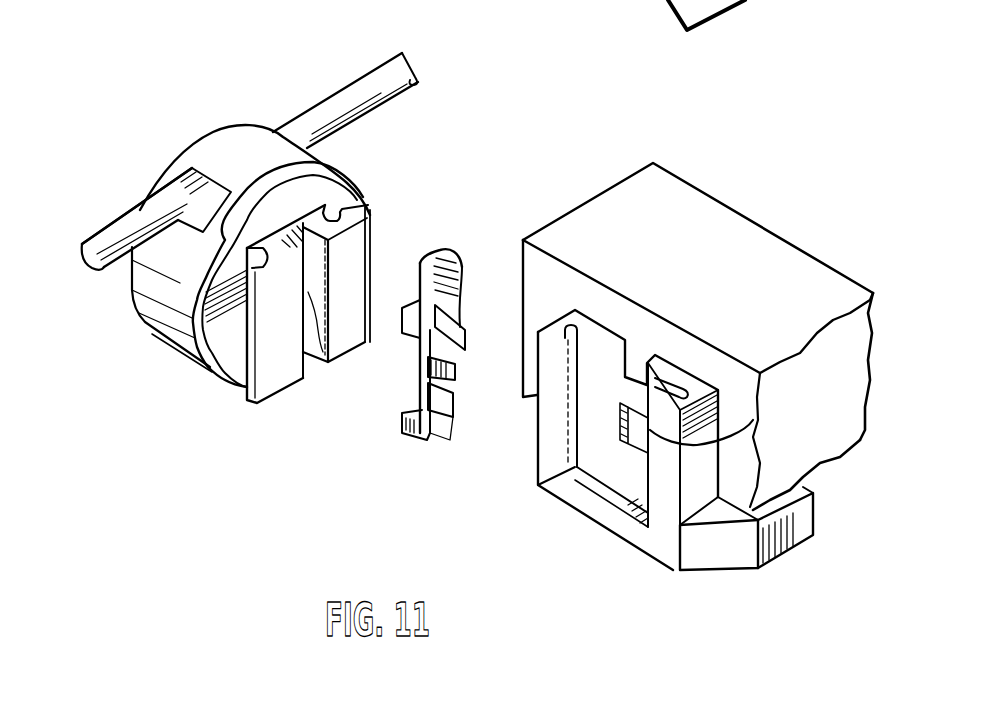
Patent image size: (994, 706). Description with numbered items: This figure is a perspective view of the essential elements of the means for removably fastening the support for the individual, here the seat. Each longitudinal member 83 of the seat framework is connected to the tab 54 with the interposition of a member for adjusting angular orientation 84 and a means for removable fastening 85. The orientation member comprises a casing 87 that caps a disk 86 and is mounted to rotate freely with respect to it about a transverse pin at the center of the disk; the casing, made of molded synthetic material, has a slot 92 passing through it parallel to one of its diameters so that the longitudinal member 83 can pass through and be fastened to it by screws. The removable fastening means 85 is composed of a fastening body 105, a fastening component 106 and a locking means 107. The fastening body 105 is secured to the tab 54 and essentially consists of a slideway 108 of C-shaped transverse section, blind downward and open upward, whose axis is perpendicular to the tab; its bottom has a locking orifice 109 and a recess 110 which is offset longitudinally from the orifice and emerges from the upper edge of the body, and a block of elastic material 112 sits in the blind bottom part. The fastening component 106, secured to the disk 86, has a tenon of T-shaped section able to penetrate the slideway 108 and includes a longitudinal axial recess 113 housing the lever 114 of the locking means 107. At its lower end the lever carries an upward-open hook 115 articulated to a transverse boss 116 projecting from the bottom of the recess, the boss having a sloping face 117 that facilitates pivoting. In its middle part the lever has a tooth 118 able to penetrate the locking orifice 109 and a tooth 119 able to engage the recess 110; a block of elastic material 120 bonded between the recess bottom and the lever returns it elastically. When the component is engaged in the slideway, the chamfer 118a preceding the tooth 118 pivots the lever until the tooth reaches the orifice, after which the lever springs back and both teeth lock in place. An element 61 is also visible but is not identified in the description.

The tab 54 is at (723, 553).
The housing wall 61 is at (800, 265).
The longitudinal member 83 is at (340, 100).
The member for adjusting angular orientation 84 is at (200, 131).
The means for removable fastening 85 is at (461, 466).
The disk 86 is at (333, 187).
The casing 87 is at (247, 140).
The slot 92 is at (178, 245).
The fastening body 105 is at (560, 313).
The fastening component 106 is at (363, 212).
The locking means 107 is at (470, 278).
The slideway 108 is at (587, 410).
The locking orifice 109 is at (762, 407).
The recess 110 is at (640, 358).
The block of elastic material 112 is at (597, 500).
The recess 113 is at (328, 262).
The lever 114 is at (453, 247).
The hook 115 is at (400, 413).
The transverse boss 116 is at (320, 332).
The sloping face 117 is at (312, 328).
The tooth 118 is at (453, 370).
The chamfer 118a is at (440, 393).
The tooth 119 is at (463, 340).
The block of elastic material 120 is at (410, 305).